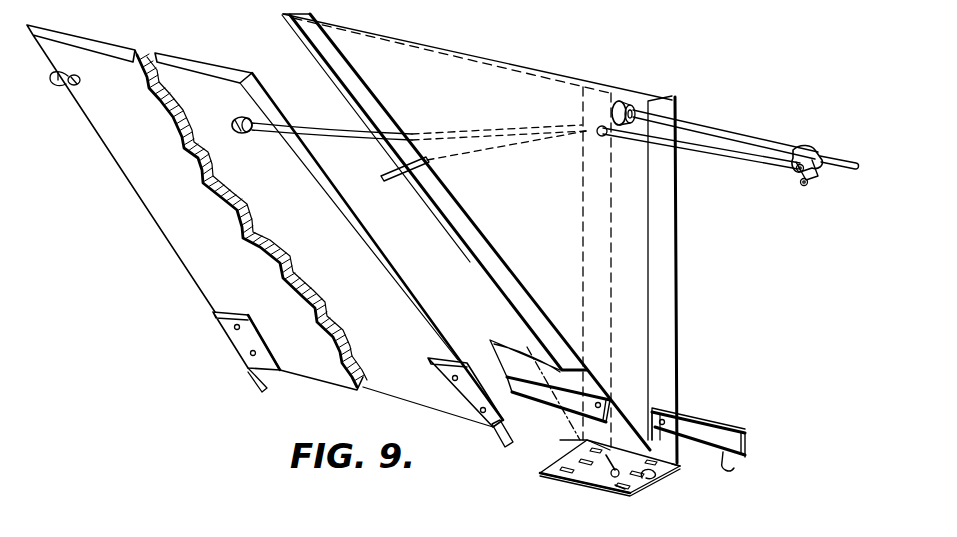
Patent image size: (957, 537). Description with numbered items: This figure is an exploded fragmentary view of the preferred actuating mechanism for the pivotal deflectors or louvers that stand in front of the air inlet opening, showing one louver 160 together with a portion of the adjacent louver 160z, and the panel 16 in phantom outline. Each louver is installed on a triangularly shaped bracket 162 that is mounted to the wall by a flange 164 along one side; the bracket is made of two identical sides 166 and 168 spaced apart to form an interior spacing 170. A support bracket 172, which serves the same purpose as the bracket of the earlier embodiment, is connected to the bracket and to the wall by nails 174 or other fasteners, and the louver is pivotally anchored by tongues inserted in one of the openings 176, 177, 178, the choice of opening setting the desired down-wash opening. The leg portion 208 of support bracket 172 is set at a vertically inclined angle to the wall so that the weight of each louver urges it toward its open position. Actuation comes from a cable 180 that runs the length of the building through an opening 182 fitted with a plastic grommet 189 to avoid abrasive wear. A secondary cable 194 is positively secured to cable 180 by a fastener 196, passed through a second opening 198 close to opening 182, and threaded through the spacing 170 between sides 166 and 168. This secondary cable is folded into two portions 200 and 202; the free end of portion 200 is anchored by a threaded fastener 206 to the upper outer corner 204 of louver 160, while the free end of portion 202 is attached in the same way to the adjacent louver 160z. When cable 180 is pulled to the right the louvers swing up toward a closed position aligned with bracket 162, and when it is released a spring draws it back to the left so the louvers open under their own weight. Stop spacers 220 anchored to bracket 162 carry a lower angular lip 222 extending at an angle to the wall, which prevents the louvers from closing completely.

The panel (phantom) 16 is at (435, 61).
The pivotal deflector 160 is at (119, 40).
The adjacent louver 160z is at (578, 443).
The triangularly shaped bracket 162 is at (573, 77).
The flange 164 is at (665, 235).
The bracket side 166 is at (498, 249).
The bracket side 168 is at (453, 234).
The interior spacing 170 is at (310, 33).
The support bracket 172 is at (680, 470).
The nail 174 is at (230, 316).
The opening 176 is at (624, 490).
The opening 177 is at (647, 474).
The opening 178 is at (670, 474).
The cable 180 is at (716, 133).
The opening 182 is at (623, 101).
The plastic grommet 189 is at (634, 112).
The secondary cable 194 is at (797, 148).
The fastener 196 is at (830, 153).
The second opening 198 is at (597, 138).
The cable portion 200 is at (332, 115).
The cable portion 202 is at (393, 181).
The upper outer corner 204 is at (217, 90).
The threaded fastener 206 is at (232, 125).
The leg portion 208 is at (607, 488).
The stop spacer 220 is at (496, 342).
The lower angular lip 222 is at (500, 436).